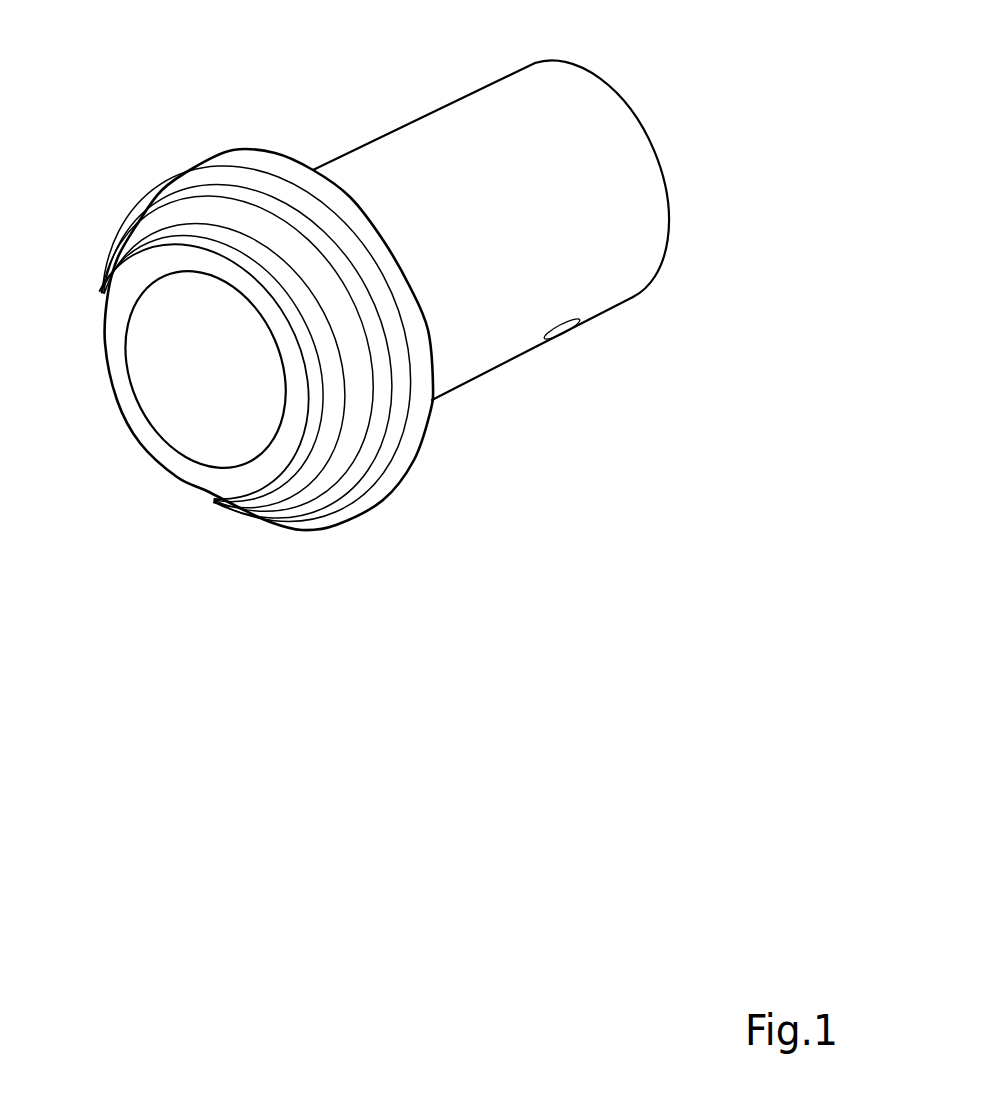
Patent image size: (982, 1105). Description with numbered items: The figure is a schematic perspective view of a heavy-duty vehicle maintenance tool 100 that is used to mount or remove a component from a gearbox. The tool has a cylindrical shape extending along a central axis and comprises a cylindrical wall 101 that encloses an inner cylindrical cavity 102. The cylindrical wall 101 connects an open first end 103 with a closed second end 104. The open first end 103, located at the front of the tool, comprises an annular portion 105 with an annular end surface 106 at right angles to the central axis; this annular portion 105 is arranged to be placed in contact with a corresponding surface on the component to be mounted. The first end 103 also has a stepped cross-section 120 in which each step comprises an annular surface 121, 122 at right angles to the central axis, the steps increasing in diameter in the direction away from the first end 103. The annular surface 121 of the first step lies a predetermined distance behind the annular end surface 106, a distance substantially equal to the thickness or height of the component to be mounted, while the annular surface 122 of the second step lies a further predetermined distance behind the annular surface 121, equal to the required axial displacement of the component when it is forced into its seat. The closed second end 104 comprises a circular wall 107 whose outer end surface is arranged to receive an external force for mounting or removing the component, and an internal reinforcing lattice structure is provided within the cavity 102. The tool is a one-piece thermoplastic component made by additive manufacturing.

The heavy-duty vehicle maintenance tool 100 is at (417, 321).
The cylindrical wall 101 is at (555, 212).
The inner cylindrical cavity 102 is at (172, 378).
The open first end 103 is at (150, 508).
The closed second end 104 is at (668, 303).
The annular portion 105 is at (213, 482).
The annular end surface 106 is at (275, 468).
The circular wall 107 is at (672, 147).
The stepped cross-section 120 is at (240, 366).
The annular surface of a first step 121 is at (163, 230).
The annular surface of a second step 122 is at (213, 177).